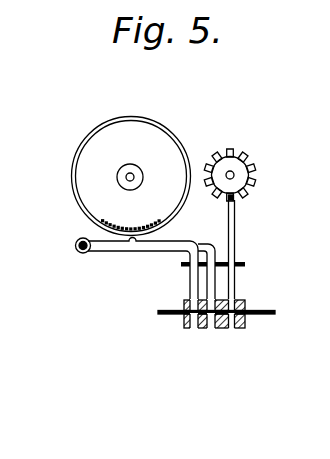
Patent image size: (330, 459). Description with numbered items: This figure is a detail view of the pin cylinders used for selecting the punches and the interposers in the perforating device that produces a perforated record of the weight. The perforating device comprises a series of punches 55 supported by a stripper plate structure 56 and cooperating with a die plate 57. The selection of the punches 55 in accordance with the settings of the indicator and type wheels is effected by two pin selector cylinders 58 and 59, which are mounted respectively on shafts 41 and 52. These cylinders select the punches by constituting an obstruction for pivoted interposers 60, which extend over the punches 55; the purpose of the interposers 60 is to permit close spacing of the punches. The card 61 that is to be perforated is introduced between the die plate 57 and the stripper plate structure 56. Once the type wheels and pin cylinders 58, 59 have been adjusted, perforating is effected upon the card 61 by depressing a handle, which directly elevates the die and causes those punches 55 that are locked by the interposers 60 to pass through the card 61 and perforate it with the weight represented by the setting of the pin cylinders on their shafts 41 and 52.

The shaft 41 is at (126, 178).
The shaft 52 is at (234, 175).
The punches 55 is at (200, 282).
The stripper plate structure 56 is at (187, 267).
The die plate 57 is at (248, 323).
The pin selector cylinder 58 is at (162, 132).
The pin selector cylinder 59 is at (247, 157).
The interposers 60 is at (122, 253).
The card 61 is at (257, 311).